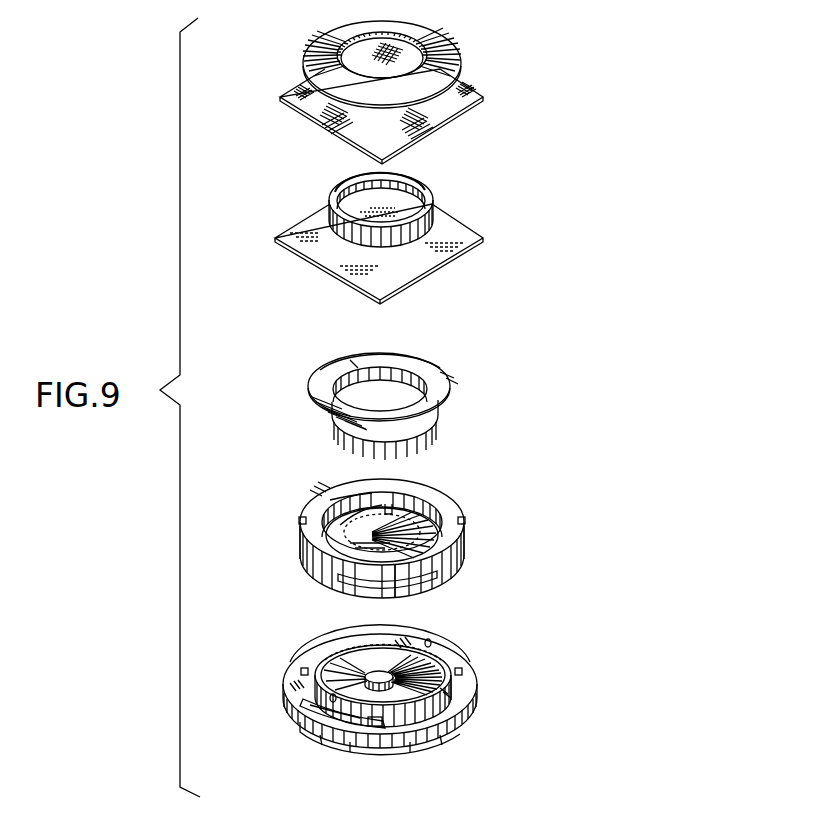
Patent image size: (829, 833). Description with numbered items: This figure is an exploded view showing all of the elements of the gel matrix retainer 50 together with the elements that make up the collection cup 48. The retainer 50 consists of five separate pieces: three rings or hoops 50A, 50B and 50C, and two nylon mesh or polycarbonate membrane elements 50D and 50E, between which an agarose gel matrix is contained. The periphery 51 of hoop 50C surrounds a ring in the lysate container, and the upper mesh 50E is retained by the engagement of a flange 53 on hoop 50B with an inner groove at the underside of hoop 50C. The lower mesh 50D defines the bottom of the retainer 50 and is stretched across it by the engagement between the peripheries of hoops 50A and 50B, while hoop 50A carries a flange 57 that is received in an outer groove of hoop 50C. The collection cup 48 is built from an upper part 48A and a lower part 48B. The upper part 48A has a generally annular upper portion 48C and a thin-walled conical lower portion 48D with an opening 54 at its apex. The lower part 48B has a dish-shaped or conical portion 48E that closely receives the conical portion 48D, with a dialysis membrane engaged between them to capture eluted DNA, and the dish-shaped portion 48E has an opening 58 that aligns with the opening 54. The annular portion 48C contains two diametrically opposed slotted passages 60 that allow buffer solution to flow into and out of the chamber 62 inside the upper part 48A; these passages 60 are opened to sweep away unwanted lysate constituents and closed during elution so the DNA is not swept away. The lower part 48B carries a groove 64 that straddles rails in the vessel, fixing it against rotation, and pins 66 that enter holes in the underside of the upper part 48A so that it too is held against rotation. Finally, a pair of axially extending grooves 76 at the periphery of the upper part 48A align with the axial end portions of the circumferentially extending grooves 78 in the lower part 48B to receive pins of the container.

The collection cup 48 is at (265, 792).
The upper part of collection cup 48A is at (458, 501).
The lower part of collection cup 48B is at (474, 717).
The annular upper portion 48C is at (325, 498).
The conical lower portion 48D is at (365, 498).
The dish-shaped portion 48E is at (403, 638).
The gel matrix retainer 50 is at (265, 20).
The hoop 50A is at (432, 430).
The hoop 50B is at (427, 222).
The hoop 50C is at (422, 85).
The lower mesh 50D is at (424, 277).
The upper mesh 50E is at (438, 125).
The periphery of hoop 51 is at (412, 39).
The flange 53 is at (427, 188).
The opening 54 is at (338, 532).
The flange 57 is at (408, 365).
The opening 58 is at (377, 674).
The slotted passages 60 is at (388, 506).
The chamber 62 is at (413, 505).
The groove 64 is at (417, 752).
The pins 66 is at (432, 643).
The axially extending grooves 76 is at (299, 520).
The circumferentially extending grooves 78 is at (368, 733).